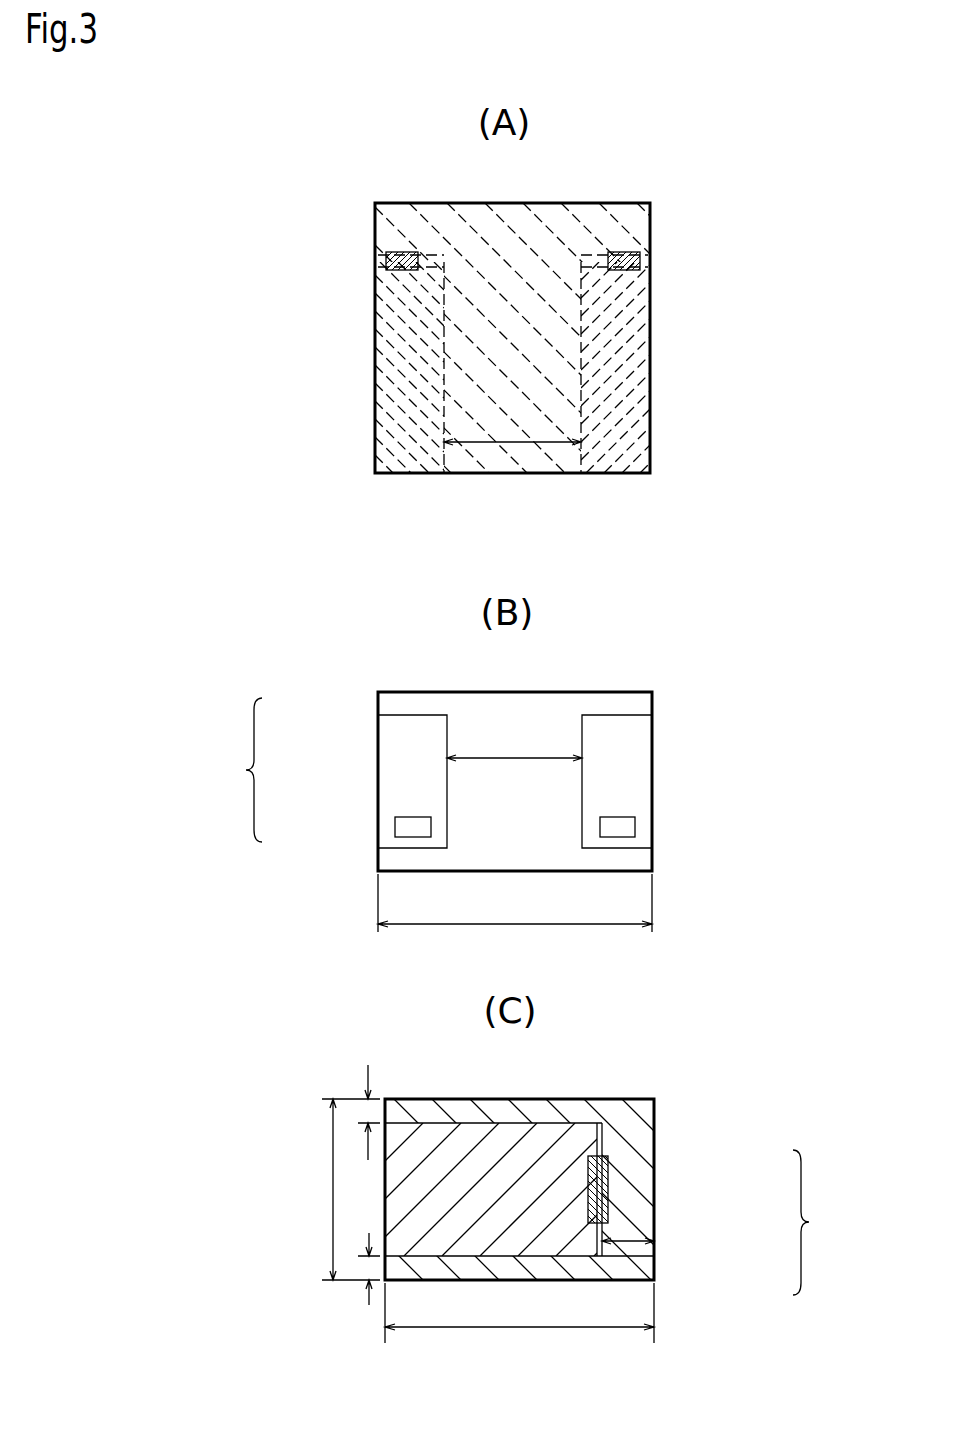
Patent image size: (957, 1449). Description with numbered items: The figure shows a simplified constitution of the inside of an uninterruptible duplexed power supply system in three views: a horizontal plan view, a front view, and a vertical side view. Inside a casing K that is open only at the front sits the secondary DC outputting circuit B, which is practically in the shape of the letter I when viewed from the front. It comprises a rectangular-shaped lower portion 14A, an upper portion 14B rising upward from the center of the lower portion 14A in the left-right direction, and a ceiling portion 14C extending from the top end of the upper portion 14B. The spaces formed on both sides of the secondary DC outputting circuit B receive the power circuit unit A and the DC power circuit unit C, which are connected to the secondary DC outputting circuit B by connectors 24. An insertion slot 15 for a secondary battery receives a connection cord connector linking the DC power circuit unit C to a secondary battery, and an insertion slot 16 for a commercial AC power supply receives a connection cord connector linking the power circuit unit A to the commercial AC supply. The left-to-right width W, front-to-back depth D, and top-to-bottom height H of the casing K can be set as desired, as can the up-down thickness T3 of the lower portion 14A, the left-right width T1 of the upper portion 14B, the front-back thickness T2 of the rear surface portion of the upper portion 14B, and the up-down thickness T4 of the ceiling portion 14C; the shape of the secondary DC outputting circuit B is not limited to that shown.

The casing K is at (597, 203).
The power circuit unit A is at (635, 390).
The secondary DC outputting circuit B is at (465, 215).
The DC power circuit unit C is at (377, 360).
The lower portion 14A is at (402, 862).
The upper portion 14B is at (472, 788).
The ceiling portion 14C is at (398, 707).
The insertion slot for a secondary battery 15 is at (432, 825).
The insertion slot for a commercial AC power supply 16 is at (635, 825).
The connector 24 is at (592, 1168).
The left-right width dimension of the upper portion T1 is at (513, 586).
The thickness of the back surface portion of the upper portion T2 is at (628, 1225).
The thickness of the lower portion T3 is at (368, 1268).
The thickness of the ceiling portion T4 is at (368, 1112).
The left-to-right width dimension of the casing W is at (515, 903).
The top-to-bottom height dimension of the casing H is at (346, 1189).
The front-to-back depth dimension of the casing D is at (519, 1313).